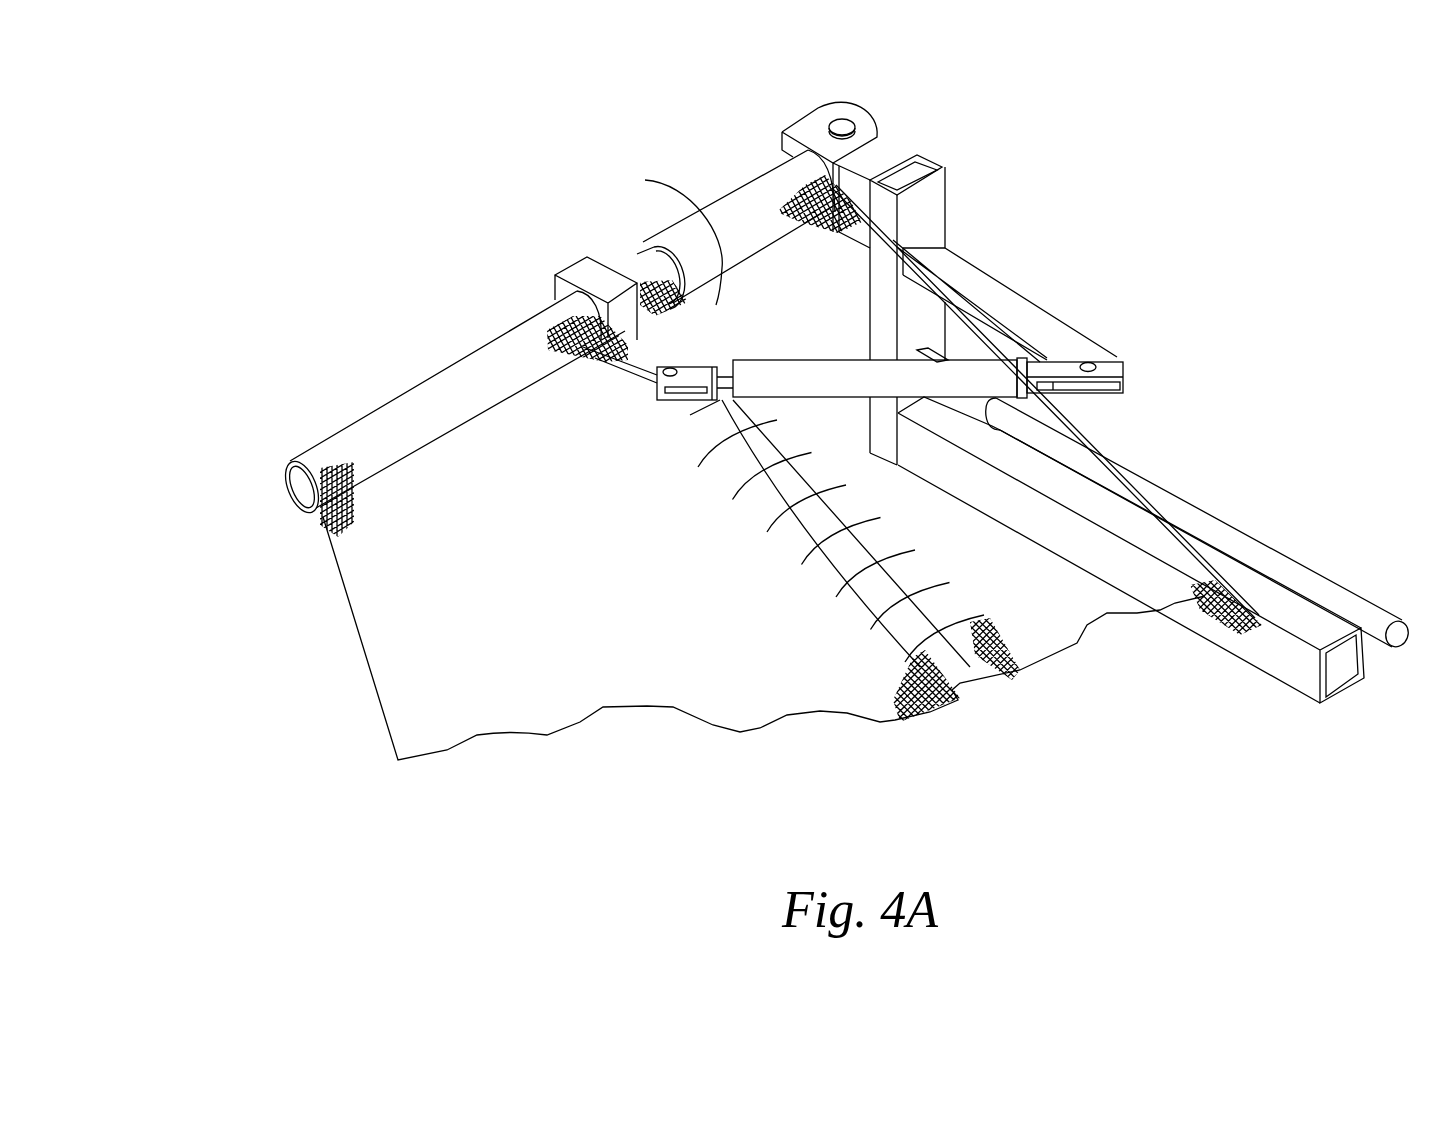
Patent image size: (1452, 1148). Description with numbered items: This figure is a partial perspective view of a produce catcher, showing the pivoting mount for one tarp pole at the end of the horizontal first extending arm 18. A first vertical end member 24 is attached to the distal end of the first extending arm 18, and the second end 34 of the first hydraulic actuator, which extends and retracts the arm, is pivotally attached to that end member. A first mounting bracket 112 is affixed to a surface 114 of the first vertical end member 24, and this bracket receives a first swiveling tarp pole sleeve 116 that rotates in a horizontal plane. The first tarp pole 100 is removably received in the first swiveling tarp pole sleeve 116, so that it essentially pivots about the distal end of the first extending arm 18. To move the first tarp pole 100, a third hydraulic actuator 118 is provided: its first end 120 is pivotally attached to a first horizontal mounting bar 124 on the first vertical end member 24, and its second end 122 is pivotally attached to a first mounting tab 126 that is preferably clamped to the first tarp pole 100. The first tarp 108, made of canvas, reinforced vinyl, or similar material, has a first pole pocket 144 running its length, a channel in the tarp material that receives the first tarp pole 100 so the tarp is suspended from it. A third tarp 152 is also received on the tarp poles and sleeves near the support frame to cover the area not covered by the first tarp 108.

The first tarp pole 100 is at (290, 476).
The first pole pocket 144 is at (305, 517).
The first tarp 108 is at (385, 640).
The first mounting tab 126 is at (650, 357).
The third tarp 152 is at (647, 178).
The second end 122 is at (712, 303).
The first swiveling tarp pole sleeve 116 is at (737, 205).
The first mounting bracket 112 is at (883, 152).
The first vertical end member 24 is at (928, 200).
The surface 114 is at (860, 289).
The first horizontal mounting bar 124 is at (993, 290).
The third hydraulic actuator 118 is at (1053, 367).
The first end 120 is at (1117, 366).
The second end 34 is at (1032, 428).
The first extending arm 18 is at (1271, 653).